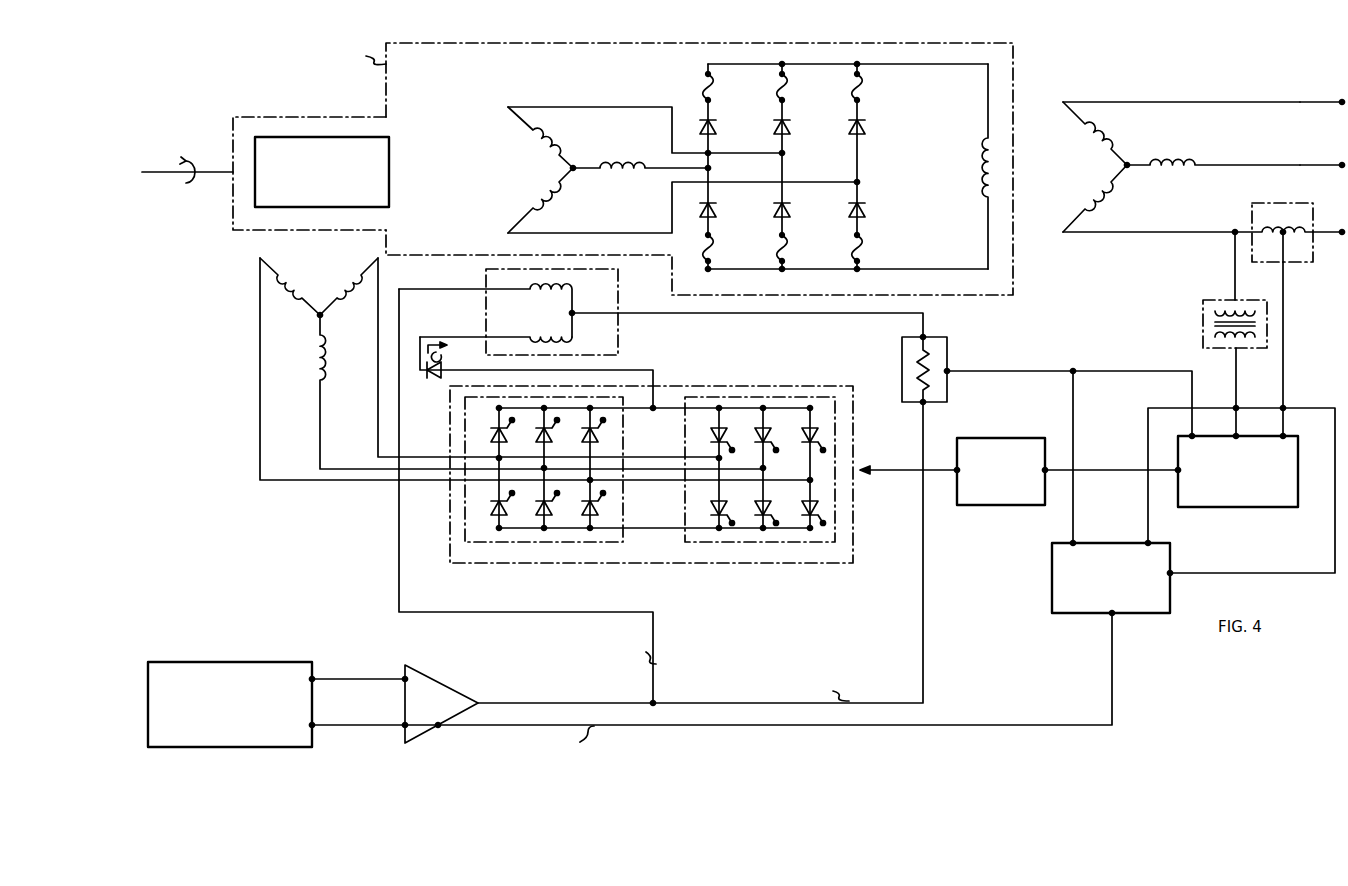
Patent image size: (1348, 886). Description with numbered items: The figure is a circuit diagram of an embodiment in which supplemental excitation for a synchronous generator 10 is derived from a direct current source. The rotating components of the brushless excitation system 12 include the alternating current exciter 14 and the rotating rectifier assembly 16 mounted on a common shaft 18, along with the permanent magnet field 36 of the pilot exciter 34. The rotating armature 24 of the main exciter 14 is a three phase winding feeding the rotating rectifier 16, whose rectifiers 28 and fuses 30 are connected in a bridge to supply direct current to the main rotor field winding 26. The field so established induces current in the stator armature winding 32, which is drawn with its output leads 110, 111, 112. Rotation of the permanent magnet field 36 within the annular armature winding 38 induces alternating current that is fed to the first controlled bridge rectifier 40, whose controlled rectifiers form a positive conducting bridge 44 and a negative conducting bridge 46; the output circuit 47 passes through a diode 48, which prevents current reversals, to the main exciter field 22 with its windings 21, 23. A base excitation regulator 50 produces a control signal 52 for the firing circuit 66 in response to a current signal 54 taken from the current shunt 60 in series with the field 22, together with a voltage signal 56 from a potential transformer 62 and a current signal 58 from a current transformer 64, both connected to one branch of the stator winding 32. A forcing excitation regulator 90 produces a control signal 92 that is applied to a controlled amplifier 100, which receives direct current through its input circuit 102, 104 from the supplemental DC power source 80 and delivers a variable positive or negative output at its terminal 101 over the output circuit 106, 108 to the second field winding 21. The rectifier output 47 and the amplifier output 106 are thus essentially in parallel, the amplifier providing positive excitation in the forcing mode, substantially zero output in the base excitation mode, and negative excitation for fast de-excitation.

The synchronous dynamoelectric machine 10 is at (1064, 93).
The brushless excitation system 12 is at (376, 102).
The alternating current exciter 14 is at (511, 138).
The rotating rectifier assembly 16 is at (826, 108).
The common shaft 18 is at (180, 172).
The second field winding 21 is at (527, 291).
The main exciter stator field winding 22 is at (618, 273).
The main exciter field winding 23 is at (535, 333).
The rotating armature member 24 is at (547, 201).
The main rotor field winding 26 is at (985, 200).
The rectifiers 28 is at (718, 132).
The fuses 30 is at (717, 94).
The stator armature winding 32 is at (1089, 130).
The pilot exciter 34 is at (258, 107).
The permanent magnet field member 36 is at (389, 139).
The annular armature winding member 38 is at (343, 295).
The first controlled bridge rectifier assembly 40 is at (809, 387).
The positive conducting bridge arrangement 44 is at (622, 549).
The negative conducting bridge arrangement 46 is at (696, 549).
The output circuit 47 is at (660, 372).
The diode 48 is at (430, 382).
The base excitation regulator 50 is at (1298, 440).
The control signal 52 is at (1089, 476).
The current signal 54 is at (1124, 373).
The voltage signal 56 is at (1234, 258).
The current signal 58 is at (1284, 320).
The current shunt 60 is at (902, 362).
The potential transformer 62 is at (1209, 301).
The current transformer 64 is at (1292, 271).
The firing circuit 66 is at (1020, 440).
The supplemental power source 80 is at (285, 663).
The forcing excitation regulator 90 is at (1175, 548).
The control signal 92 is at (1116, 660).
The controlled amplifier 100 is at (435, 679).
The output terminal 101 is at (481, 703).
The input circuit 102 is at (387, 680).
The input circuit 104 is at (388, 730).
The output circuit 106 is at (656, 617).
The output circuit 108 is at (929, 615).
The stator output terminal 110 is at (1268, 101).
The stator output terminal 111 is at (1271, 165).
The stator output terminal 112 is at (1311, 232).